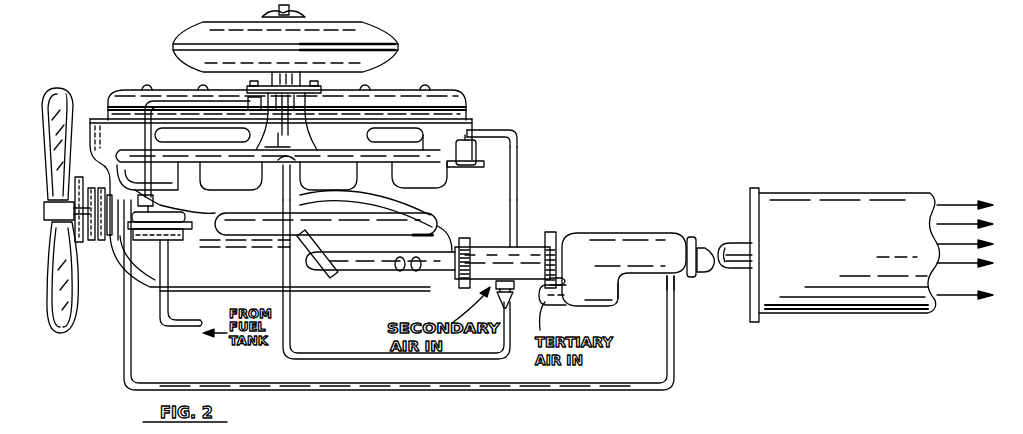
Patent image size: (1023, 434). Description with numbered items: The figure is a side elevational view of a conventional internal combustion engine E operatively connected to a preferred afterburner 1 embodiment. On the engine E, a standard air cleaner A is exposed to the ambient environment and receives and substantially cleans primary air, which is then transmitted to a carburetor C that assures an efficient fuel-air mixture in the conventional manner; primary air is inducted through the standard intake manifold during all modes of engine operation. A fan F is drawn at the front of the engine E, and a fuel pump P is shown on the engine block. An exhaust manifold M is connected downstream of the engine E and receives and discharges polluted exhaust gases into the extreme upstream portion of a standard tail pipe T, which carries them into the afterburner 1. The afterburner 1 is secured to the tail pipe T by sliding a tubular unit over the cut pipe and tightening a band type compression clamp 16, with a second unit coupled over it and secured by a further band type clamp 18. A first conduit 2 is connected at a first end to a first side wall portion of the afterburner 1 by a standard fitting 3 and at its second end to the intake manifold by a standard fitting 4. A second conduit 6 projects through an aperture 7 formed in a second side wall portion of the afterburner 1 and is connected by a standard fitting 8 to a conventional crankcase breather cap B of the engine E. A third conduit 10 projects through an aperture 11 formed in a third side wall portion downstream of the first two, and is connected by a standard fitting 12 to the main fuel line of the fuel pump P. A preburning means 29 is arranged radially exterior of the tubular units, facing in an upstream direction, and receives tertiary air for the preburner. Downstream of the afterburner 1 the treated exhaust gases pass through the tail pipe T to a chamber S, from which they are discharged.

The air cleaner A is at (385, 34).
The crankcase breather cap B is at (482, 152).
The carburetor C is at (312, 100).
The engine E is at (126, 92).
The fan F is at (55, 276).
The exhaust manifold M is at (378, 188).
The fuel pump P is at (180, 236).
The silencer / chamber S is at (833, 228).
The tail pipe T is at (742, 270).
The afterburner 1 is at (573, 210).
The first conduit 2 is at (318, 361).
The fitting 3 is at (515, 290).
The fitting 4 is at (294, 168).
The second conduit 6 is at (517, 150).
The aperture 7 is at (518, 246).
The fitting 8 is at (490, 133).
The third conduit 10 is at (505, 392).
The aperture 11 is at (673, 277).
The fitting 12 is at (150, 186).
The band type compression clamp 16 is at (467, 240).
The band type clamp 18 is at (551, 233).
The preburning means 29 is at (626, 296).